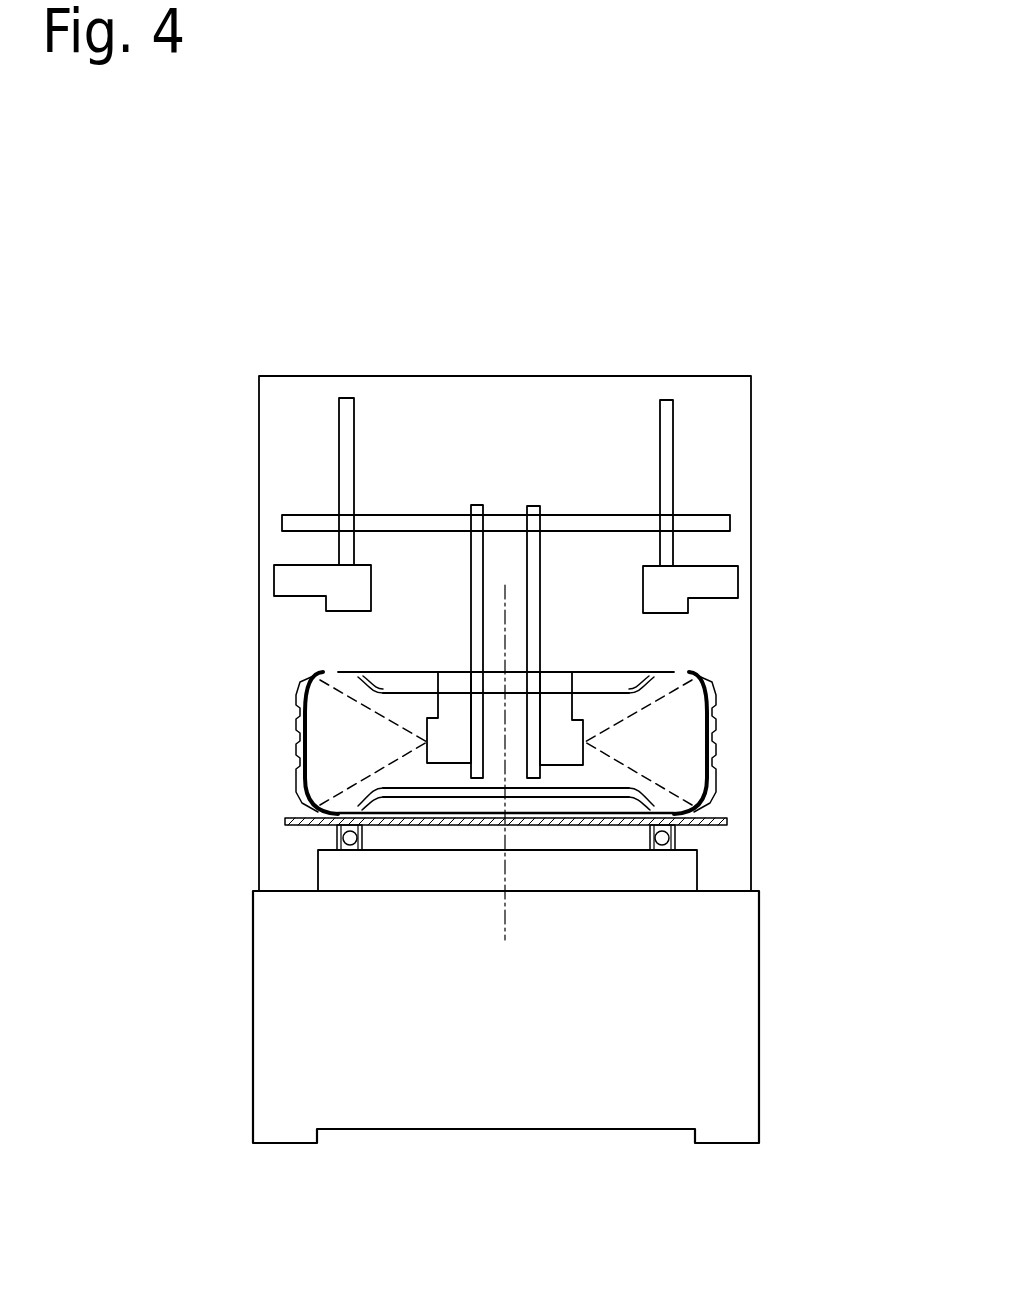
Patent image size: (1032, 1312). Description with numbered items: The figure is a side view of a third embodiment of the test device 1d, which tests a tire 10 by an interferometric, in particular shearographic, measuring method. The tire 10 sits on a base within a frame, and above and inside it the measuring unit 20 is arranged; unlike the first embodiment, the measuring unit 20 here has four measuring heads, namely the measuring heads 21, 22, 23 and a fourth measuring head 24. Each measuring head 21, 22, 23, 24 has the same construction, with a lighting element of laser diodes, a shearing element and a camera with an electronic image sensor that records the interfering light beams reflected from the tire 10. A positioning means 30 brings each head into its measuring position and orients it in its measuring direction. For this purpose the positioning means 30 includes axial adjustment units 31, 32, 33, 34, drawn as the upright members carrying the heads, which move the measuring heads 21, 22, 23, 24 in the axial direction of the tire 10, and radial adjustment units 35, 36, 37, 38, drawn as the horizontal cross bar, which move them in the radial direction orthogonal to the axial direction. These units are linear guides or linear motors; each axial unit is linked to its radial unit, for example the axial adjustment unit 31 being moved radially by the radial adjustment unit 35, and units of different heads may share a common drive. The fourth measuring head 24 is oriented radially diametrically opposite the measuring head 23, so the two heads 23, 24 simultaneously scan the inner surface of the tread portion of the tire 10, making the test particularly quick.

The test device 1d is at (507, 256).
The tire 10 is at (293, 770).
The measuring unit 20 is at (496, 505).
The measuring head 21 is at (293, 585).
The measuring head 22 is at (727, 582).
The measuring head 23 is at (565, 727).
The fourth measuring head 24 is at (450, 710).
The positioning means 30 is at (494, 528).
The axial adjustment unit 31 is at (348, 424).
The axial adjustment unit 32 is at (668, 420).
The axial adjustment unit 33 is at (537, 560).
The axial adjustment unit 34 is at (477, 572).
The radial adjustment unit 35 is at (465, 397).
The radial adjustment unit 36 is at (506, 523).
The radial adjustment unit 37 is at (506, 523).
The radial adjustment unit 38 is at (412, 523).